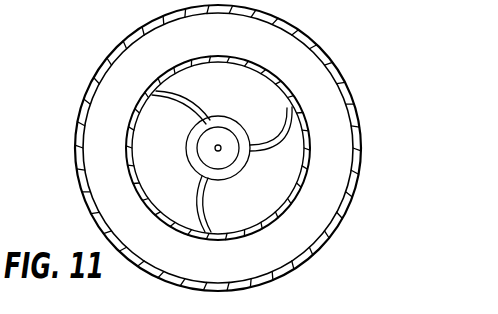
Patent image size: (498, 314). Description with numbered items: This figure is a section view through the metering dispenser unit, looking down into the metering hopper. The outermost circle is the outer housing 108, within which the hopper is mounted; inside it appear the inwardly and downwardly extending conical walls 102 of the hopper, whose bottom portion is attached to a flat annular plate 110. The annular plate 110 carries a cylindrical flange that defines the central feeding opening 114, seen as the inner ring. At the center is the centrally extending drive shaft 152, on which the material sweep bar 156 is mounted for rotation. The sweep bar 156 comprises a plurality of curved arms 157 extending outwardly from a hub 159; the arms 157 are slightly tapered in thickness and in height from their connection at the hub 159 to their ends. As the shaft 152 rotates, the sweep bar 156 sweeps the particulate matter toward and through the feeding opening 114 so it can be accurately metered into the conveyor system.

The conical walls 102 is at (335, 72).
The outer housing 108 is at (303, 33).
The flat annular plate 110 is at (120, 84).
The central feeding opening 114 is at (186, 146).
The drive shaft 152 is at (217, 146).
The material sweep bar 156 is at (284, 137).
The curved arms 157 is at (183, 110).
The hub 159 is at (230, 140).